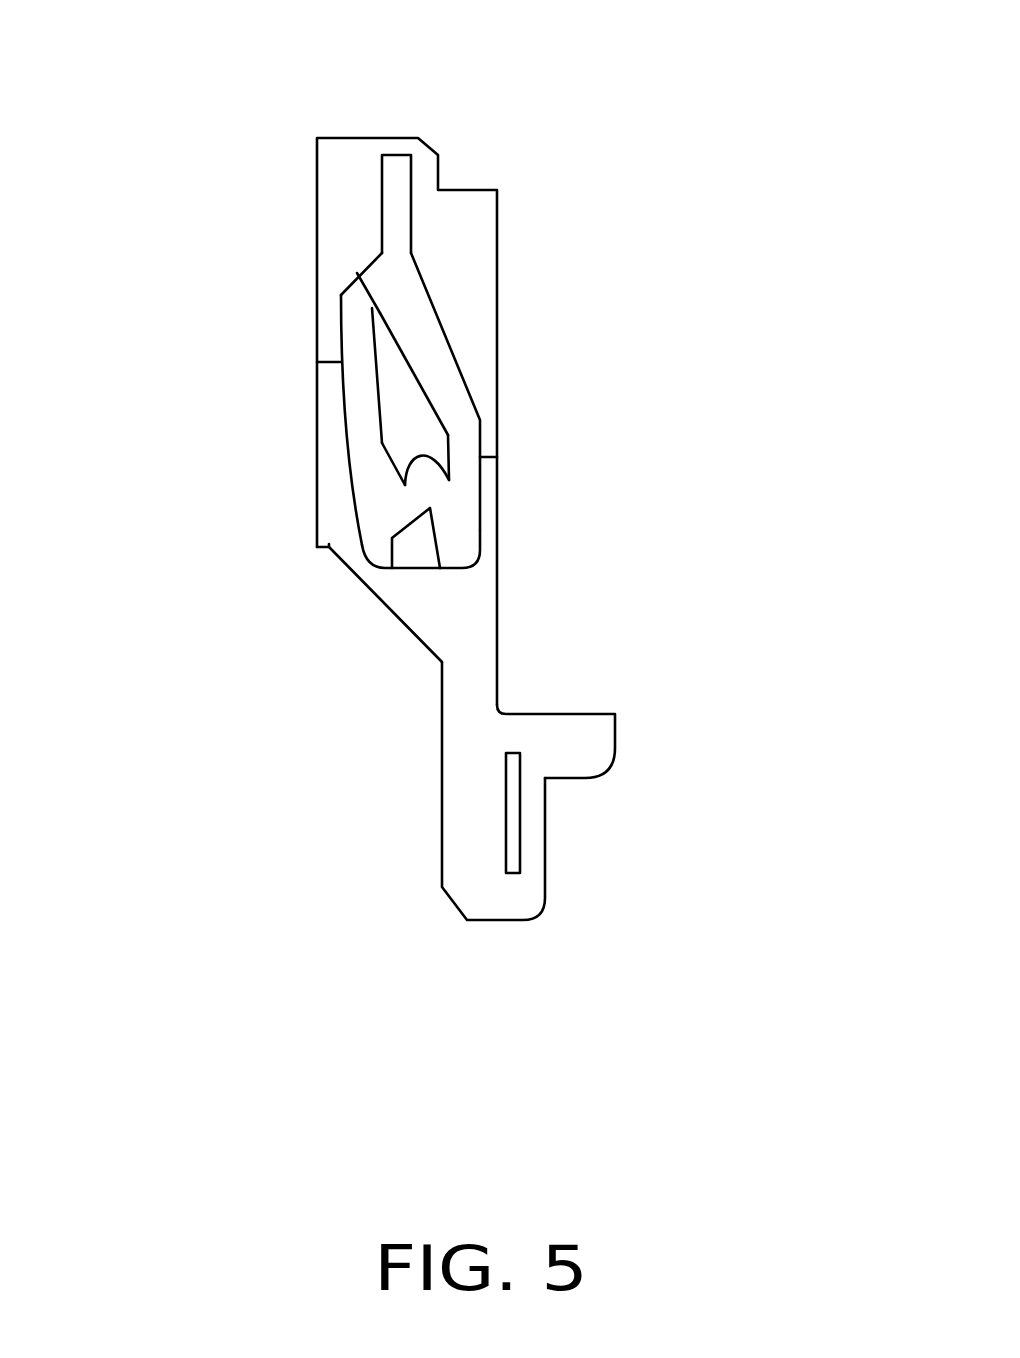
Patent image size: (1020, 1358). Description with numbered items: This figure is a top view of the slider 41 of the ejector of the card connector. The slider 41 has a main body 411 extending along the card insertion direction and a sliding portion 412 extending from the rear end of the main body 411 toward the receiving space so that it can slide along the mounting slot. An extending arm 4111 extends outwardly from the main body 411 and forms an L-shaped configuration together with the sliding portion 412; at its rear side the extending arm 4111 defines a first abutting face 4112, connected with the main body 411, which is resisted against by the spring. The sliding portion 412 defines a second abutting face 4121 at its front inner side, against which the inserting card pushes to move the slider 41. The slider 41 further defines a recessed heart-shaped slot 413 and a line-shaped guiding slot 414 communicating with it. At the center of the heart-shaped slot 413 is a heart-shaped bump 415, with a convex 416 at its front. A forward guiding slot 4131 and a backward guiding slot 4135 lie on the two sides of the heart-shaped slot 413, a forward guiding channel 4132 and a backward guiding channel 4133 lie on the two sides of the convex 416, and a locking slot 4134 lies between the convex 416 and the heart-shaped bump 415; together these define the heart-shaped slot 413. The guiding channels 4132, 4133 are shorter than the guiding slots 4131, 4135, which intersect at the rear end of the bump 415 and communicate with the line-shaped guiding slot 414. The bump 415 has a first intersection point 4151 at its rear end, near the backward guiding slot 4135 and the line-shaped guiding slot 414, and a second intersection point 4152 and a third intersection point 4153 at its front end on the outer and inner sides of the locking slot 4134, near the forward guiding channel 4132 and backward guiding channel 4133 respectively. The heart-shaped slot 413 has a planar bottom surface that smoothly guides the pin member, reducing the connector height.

The slider 41 is at (435, 502).
The main body 411 is at (500, 900).
The extending arm 4111 is at (573, 750).
The first abutting face 4112 is at (562, 713).
The sliding portion 412 is at (347, 170).
The second abutting face 4121 is at (400, 620).
The heart-shaped slot 413 is at (412, 323).
The forward guiding slot 4131 is at (437, 367).
The forward guiding channel 4132 is at (458, 550).
The backward guiding channel 4133 is at (378, 548).
The locking slot 4134 is at (424, 471).
The backward guiding slot 4135 is at (360, 352).
The line-shaped guiding slot 414 is at (398, 173).
The heart-shaped bump 415 is at (400, 405).
The first intersection point 4151 is at (357, 273).
The second intersection point 4152 is at (450, 478).
The third intersection point 4153 is at (405, 486).
The convex 416 is at (418, 542).